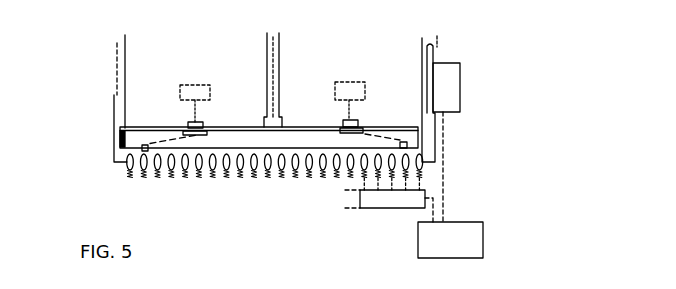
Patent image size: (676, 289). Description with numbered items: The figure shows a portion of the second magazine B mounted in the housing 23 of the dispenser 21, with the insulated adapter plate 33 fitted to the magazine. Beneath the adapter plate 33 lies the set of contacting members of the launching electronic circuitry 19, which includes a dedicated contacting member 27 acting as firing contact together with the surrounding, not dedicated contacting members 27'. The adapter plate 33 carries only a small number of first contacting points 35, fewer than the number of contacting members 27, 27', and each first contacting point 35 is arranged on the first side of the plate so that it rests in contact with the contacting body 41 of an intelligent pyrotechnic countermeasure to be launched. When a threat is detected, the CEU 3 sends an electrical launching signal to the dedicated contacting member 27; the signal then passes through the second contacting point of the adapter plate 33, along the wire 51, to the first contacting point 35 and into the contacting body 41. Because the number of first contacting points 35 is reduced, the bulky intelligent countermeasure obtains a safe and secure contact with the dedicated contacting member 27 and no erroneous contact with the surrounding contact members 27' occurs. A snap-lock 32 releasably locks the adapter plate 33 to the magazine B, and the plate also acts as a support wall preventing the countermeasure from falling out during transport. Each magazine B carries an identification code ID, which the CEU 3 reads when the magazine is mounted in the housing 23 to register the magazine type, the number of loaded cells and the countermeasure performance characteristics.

The housing 23 is at (285, 22).
The snap-lock 32 is at (108, 133).
The second magazine B is at (436, 48).
The adapter plate 33 is at (247, 137).
The first contacting point 35 is at (273, 91).
The contacting body 41 is at (182, 64).
The wire 51 is at (162, 140).
The dedicated contacting member 27 is at (275, 155).
The not dedicated contacting member 27' is at (256, 208).
The launching electronic circuitry 19 is at (412, 209).
The CEU 3 is at (460, 222).
The dispenser 21 is at (445, 133).
The identification code ID is at (452, 79).